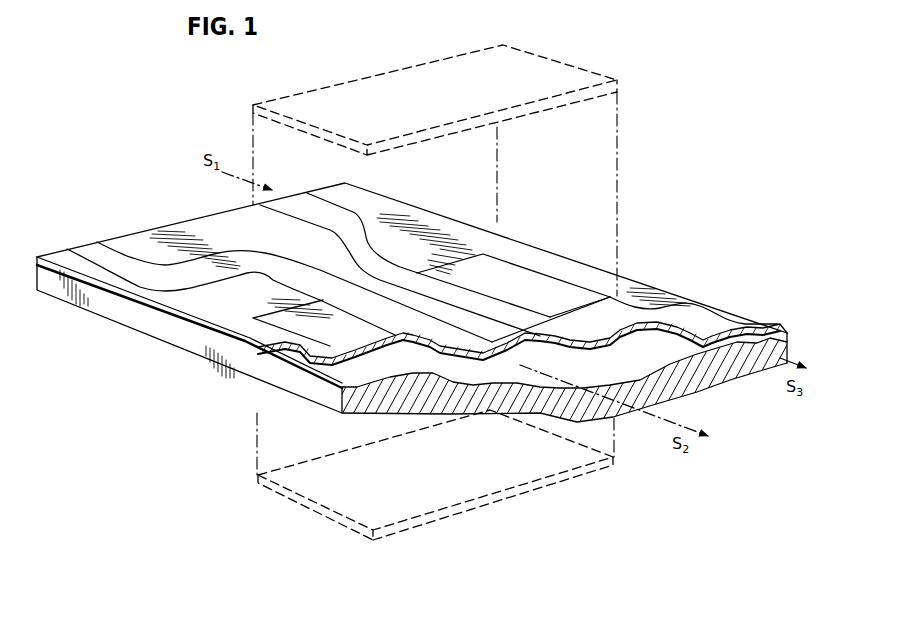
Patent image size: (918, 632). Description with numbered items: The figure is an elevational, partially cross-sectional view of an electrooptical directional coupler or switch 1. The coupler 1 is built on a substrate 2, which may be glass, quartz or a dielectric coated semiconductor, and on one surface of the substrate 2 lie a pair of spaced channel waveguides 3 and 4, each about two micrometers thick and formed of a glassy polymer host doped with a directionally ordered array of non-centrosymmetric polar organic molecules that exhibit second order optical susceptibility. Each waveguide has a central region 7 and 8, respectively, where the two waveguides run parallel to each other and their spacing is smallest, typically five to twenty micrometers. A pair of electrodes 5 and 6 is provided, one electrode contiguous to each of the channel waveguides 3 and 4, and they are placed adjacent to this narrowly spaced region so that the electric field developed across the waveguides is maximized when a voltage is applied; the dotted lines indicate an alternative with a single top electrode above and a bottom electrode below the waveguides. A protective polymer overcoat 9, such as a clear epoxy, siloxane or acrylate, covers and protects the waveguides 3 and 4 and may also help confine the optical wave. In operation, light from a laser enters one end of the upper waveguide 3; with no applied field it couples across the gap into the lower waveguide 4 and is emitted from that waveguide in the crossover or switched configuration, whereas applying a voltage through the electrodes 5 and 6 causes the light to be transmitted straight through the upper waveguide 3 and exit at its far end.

The electrooptical directional coupler or switch 1 is at (632, 262).
The substrate 2 is at (132, 320).
The channel waveguide 3 is at (703, 327).
The channel waveguide 4 is at (88, 249).
The electrode 5 is at (540, 278).
The electrode 6 is at (320, 347).
The central region 7 is at (410, 274).
The central region 8 is at (305, 283).
The protective polymer overcoat 9 is at (155, 233).